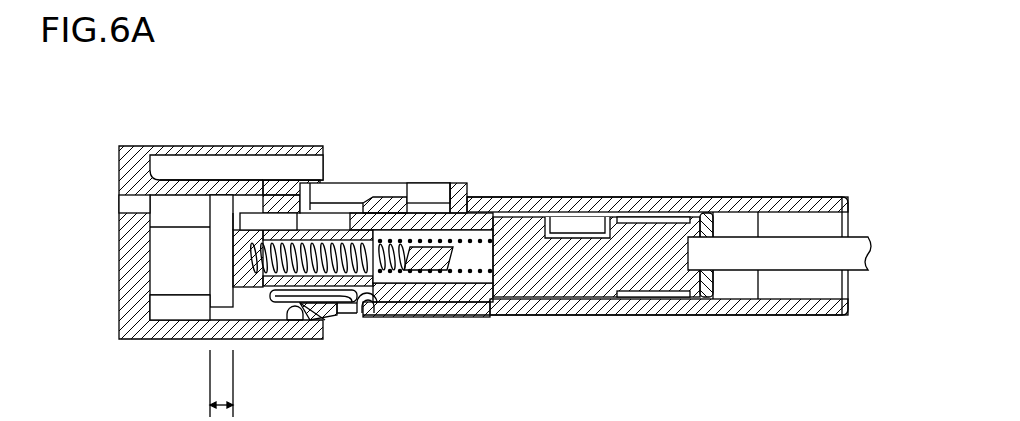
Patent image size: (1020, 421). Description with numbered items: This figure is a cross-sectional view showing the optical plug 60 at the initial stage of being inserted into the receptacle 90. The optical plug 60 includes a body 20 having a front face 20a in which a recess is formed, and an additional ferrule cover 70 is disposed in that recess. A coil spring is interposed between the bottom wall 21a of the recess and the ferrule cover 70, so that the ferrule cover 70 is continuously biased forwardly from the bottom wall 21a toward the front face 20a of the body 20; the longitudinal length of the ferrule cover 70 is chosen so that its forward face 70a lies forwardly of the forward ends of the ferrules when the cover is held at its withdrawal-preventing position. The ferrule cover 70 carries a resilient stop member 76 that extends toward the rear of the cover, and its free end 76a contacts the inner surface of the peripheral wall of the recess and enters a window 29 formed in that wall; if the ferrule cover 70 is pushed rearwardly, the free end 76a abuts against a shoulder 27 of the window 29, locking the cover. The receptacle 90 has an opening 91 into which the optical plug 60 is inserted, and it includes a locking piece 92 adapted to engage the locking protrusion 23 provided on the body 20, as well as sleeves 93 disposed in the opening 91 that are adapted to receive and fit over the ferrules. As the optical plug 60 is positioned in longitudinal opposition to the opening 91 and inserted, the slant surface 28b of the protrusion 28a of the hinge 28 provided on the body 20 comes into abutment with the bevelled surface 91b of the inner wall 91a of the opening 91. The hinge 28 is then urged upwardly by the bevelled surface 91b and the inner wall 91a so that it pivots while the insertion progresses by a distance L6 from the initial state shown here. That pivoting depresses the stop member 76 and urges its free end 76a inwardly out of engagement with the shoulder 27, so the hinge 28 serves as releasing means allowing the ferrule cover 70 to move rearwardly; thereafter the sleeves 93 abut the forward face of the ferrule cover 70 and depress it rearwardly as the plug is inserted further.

The receptacle 90 is at (160, 143).
The opening 91 is at (320, 160).
The locking piece 92 is at (213, 177).
The sleeves 93 is at (175, 297).
The ferrule cover 70 is at (268, 230).
The forward face 70a is at (233, 262).
The body 20 is at (468, 318).
The front face 20a is at (297, 180).
The bottom wall 21a is at (483, 213).
The locking protrusion 23 is at (400, 198).
The optical plug 60 is at (616, 194).
The shoulder 27 is at (360, 305).
The hinge 28 is at (345, 303).
The protrusion 28a is at (317, 322).
The slant surface 28b is at (300, 307).
The window 29 is at (368, 305).
The stop member 76 is at (347, 310).
The free end 76a is at (355, 302).
The inner wall 91a is at (258, 318).
The bevelled surface 91b is at (313, 320).
The distance L6 is at (210, 405).